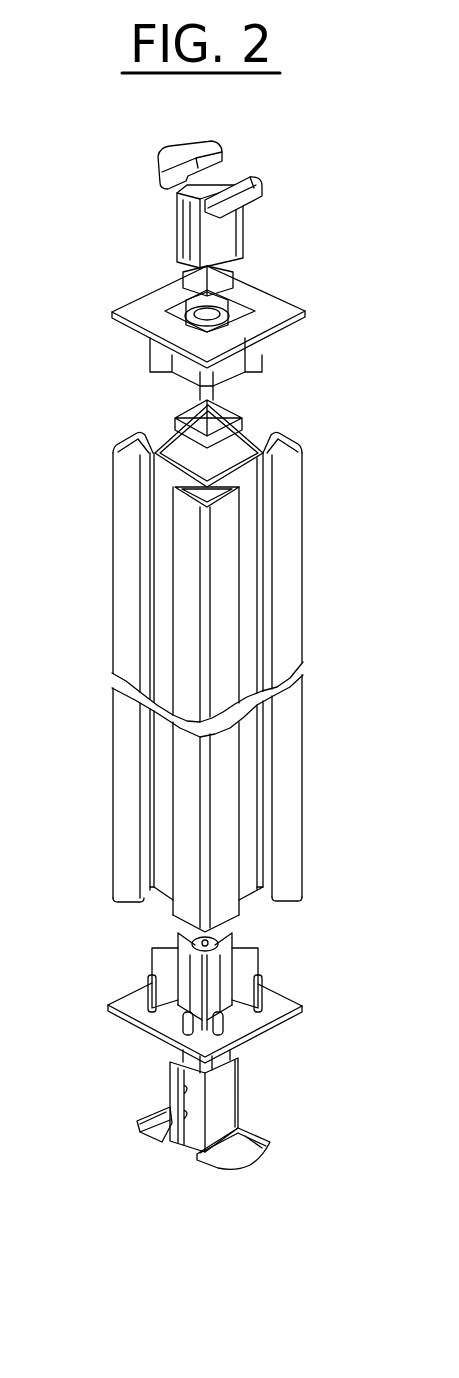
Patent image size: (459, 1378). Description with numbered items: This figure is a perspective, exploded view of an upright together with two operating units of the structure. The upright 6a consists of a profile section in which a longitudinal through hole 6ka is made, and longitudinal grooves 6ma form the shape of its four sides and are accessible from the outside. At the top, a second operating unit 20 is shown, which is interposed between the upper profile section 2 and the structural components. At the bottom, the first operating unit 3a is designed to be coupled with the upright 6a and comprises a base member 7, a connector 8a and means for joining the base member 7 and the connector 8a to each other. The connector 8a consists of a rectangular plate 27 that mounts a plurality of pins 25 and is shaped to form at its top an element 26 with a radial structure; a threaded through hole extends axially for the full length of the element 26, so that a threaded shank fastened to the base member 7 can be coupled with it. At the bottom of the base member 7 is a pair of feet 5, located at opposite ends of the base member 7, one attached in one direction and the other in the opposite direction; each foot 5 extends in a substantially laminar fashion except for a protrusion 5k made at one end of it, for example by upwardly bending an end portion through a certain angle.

The upper profile section 2 is at (254, 626).
The second operating unit 20 is at (283, 228).
The longitudinal through hole 6ka is at (228, 448).
The longitudinal grooves 6ma is at (165, 523).
The upright 6a is at (287, 570).
The connector 8a is at (237, 985).
The element with a radial structure 26 is at (263, 942).
The rectangular plate 27 is at (277, 1003).
The first operating unit 3a is at (312, 997).
The pins 25 is at (140, 1007).
The base member 7 is at (222, 1098).
The feet 5 is at (162, 1110).
The protrusion 5k is at (257, 1136).